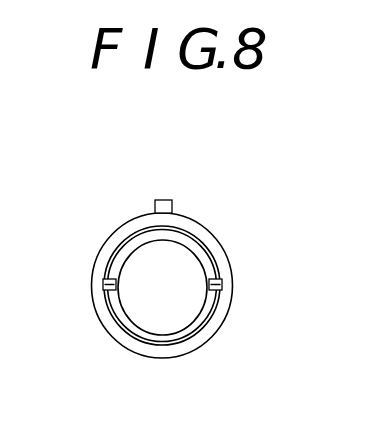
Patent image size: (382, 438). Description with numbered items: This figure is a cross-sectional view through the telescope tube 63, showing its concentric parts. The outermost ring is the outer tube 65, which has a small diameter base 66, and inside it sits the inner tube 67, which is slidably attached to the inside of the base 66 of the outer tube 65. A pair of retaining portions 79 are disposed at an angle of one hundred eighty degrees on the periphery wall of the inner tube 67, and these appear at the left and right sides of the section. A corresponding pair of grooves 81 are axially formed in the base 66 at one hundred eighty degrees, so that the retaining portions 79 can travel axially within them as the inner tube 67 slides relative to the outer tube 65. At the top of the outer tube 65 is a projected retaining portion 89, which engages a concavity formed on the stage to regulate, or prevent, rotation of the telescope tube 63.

The telescope tube 63 is at (209, 227).
The outer tube 65 is at (223, 248).
The base 66 is at (158, 342).
The inner tube 67 is at (193, 325).
The grooves 81 is at (106, 279).
The retaining portions 79 is at (108, 289).
The projected retaining portion 89 is at (162, 200).